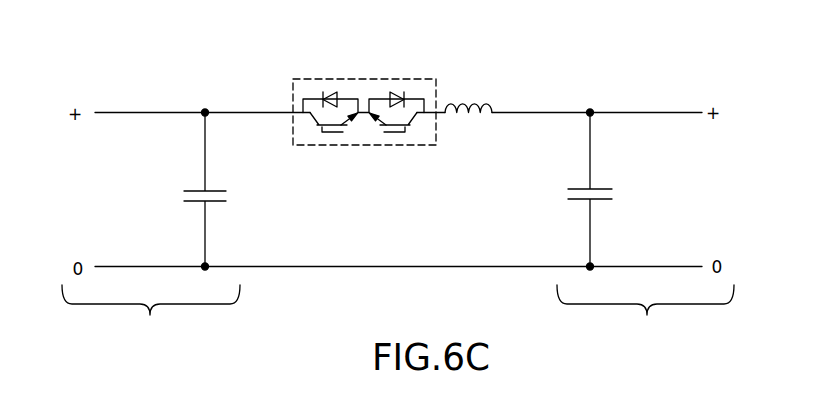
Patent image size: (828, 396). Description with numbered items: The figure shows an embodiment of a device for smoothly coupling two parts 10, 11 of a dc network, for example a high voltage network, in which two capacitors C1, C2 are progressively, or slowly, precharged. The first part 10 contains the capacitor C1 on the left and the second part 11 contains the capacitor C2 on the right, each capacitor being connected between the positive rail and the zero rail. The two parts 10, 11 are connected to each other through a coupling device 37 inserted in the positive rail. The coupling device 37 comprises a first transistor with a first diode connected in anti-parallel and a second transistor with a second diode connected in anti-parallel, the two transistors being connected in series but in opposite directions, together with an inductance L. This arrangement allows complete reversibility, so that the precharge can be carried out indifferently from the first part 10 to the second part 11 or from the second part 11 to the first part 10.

The coupling device 37 is at (363, 78).
The first part of the dc network 10 is at (151, 314).
The second part of the dc network 11 is at (645, 313).
The first capacitor C1 is at (195, 189).
The second capacitor C2 is at (598, 189).
The inductance L is at (468, 121).